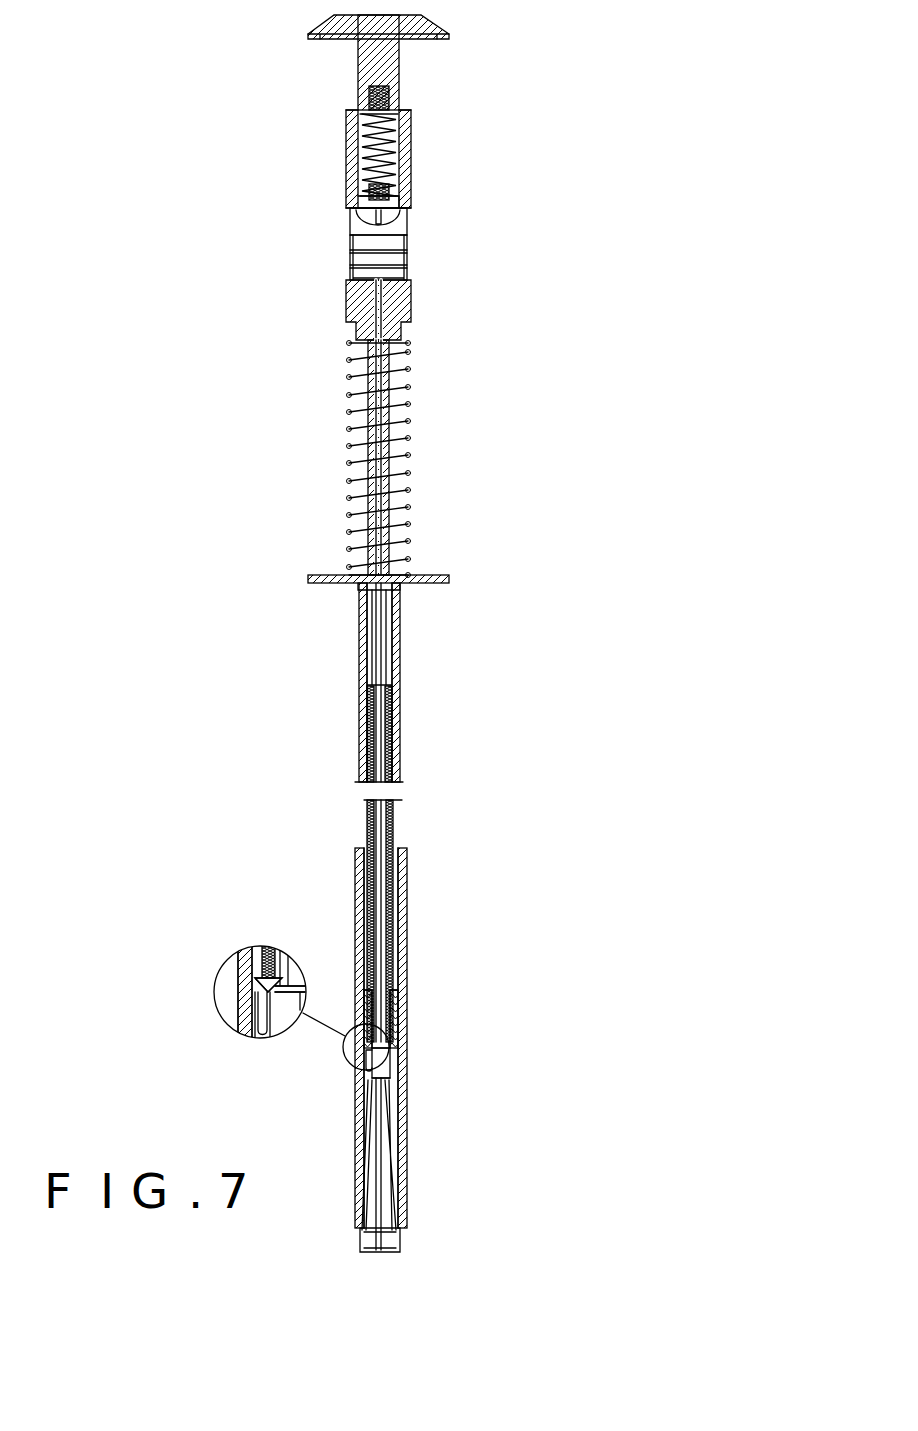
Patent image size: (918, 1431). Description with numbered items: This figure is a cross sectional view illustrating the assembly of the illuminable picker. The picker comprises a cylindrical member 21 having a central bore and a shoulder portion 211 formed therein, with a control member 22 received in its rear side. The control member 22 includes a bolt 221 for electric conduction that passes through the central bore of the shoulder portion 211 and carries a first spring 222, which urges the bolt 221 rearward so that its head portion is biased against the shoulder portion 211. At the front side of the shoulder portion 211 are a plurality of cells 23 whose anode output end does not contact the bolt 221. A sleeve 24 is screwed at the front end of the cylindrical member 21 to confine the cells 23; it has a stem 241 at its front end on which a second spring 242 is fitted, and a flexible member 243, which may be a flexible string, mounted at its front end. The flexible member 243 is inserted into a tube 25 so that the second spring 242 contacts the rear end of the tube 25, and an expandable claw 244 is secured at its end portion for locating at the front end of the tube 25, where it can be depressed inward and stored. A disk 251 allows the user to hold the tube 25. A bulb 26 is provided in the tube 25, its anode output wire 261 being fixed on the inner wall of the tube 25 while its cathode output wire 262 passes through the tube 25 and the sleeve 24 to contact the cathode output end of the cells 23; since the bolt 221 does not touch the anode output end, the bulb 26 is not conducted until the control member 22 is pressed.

The control member 22 is at (430, 22).
The cylindrical member 21 is at (411, 150).
The first spring 222 is at (346, 148).
The shoulder portion 211 is at (404, 201).
The bolt 221 is at (390, 218).
The cells 23 is at (400, 258).
The sleeve 24 is at (401, 306).
The stem 241 is at (389, 381).
The second spring 242 is at (410, 437).
The disk 251 is at (432, 590).
The tube 25 is at (400, 716).
The flexible member 243 is at (381, 916).
The expandable claw 244 is at (402, 1242).
The bulb 26 is at (365, 1057).
The anode output wire 261 is at (258, 990).
The cathode output wire 262 is at (300, 990).